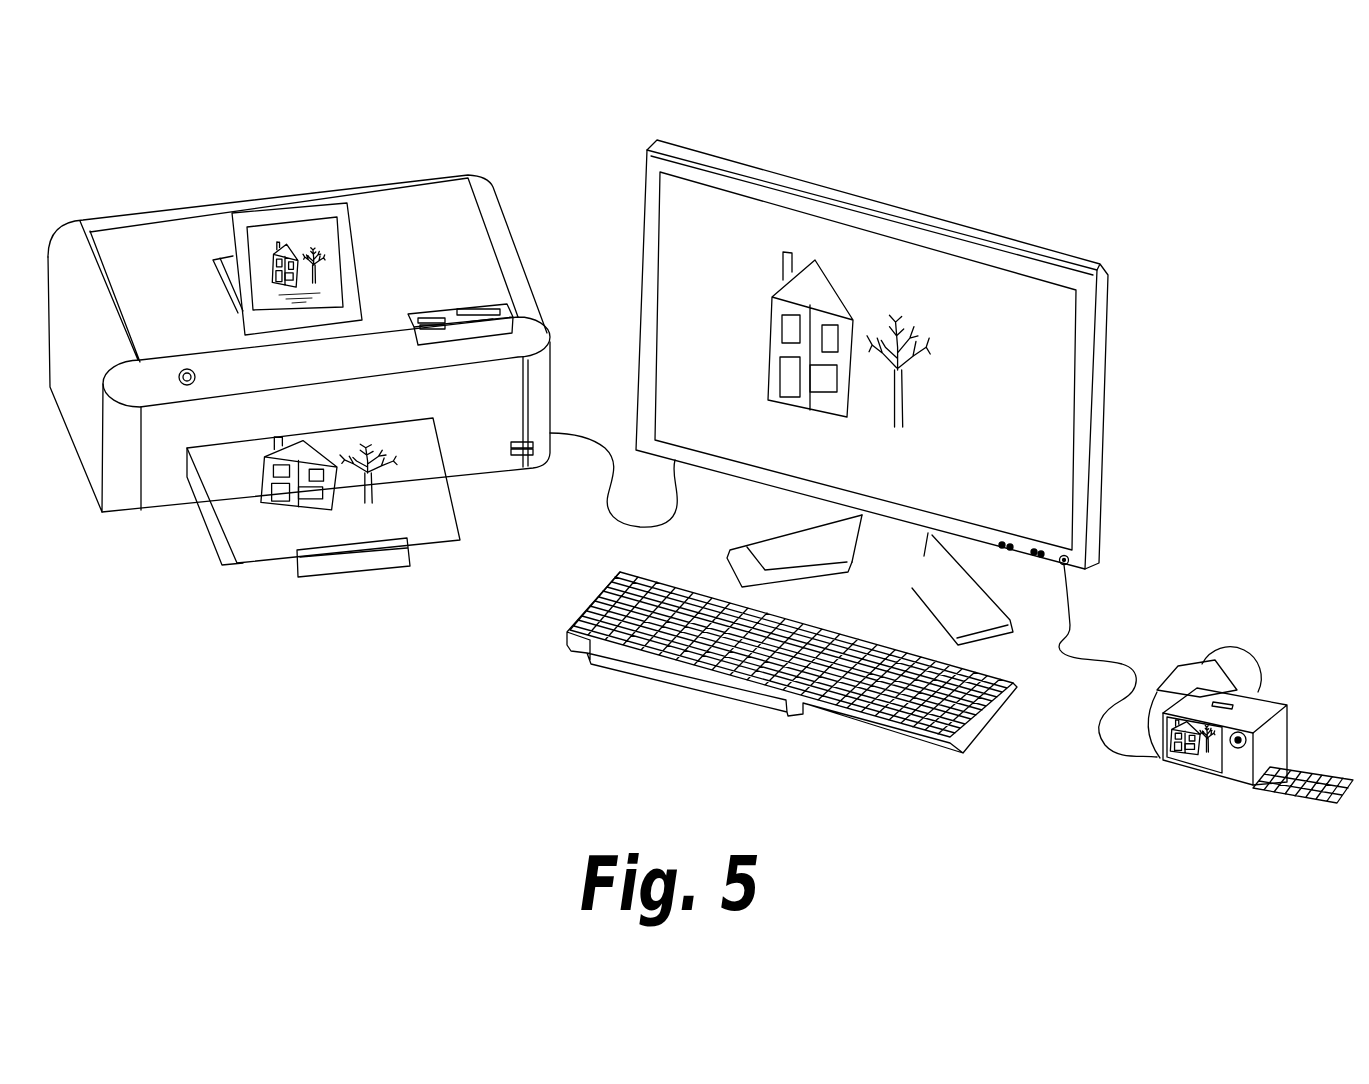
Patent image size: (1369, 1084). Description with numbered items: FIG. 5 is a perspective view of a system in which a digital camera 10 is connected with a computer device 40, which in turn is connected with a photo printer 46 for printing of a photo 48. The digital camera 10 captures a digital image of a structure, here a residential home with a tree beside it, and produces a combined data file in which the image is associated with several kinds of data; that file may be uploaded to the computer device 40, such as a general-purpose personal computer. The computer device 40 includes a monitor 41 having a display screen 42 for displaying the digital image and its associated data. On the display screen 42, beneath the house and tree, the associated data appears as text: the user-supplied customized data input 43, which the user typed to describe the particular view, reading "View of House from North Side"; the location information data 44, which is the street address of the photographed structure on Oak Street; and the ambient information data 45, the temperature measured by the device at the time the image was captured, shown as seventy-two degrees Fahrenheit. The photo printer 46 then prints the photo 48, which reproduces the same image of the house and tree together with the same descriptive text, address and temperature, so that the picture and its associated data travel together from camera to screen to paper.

The digital camera 10 is at (1276, 603).
The computer device 40 is at (1014, 193).
The monitor 41 is at (1108, 288).
The display screen 42 is at (1033, 347).
The user-supplied customized data input 43 is at (921, 468).
The location information data 44 is at (798, 459).
The ambient information data 45 is at (848, 479).
The photo printer 46 is at (389, 180).
The photo 48 is at (270, 563).